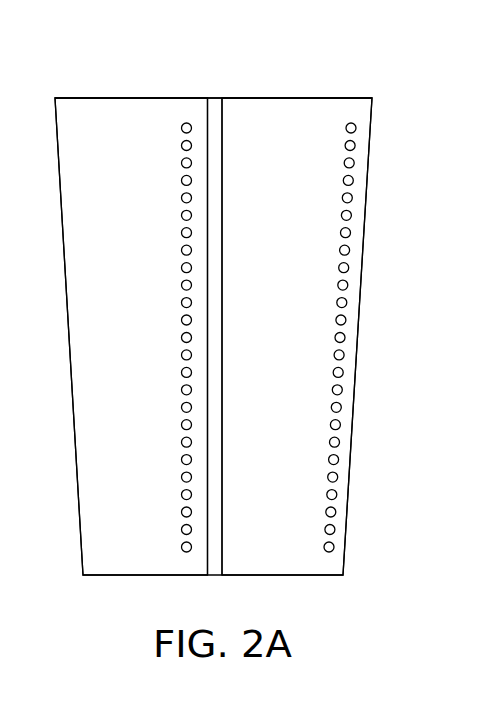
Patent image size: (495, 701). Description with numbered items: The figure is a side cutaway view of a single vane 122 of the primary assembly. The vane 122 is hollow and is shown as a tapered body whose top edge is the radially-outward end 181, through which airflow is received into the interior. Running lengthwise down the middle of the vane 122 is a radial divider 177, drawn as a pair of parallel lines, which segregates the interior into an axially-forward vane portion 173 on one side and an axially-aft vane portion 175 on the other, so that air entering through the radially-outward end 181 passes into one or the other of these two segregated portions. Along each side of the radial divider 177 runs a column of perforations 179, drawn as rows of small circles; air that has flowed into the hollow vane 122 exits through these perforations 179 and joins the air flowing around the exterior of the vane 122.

The vane 122 is at (356, 392).
The axially-forward vane portion 173 is at (125, 331).
The axially-aft vane portion 175 is at (283, 331).
The radial divider 177 is at (213, 110).
The perforations 179 is at (176, 138).
The radially-outward end 181 is at (333, 98).